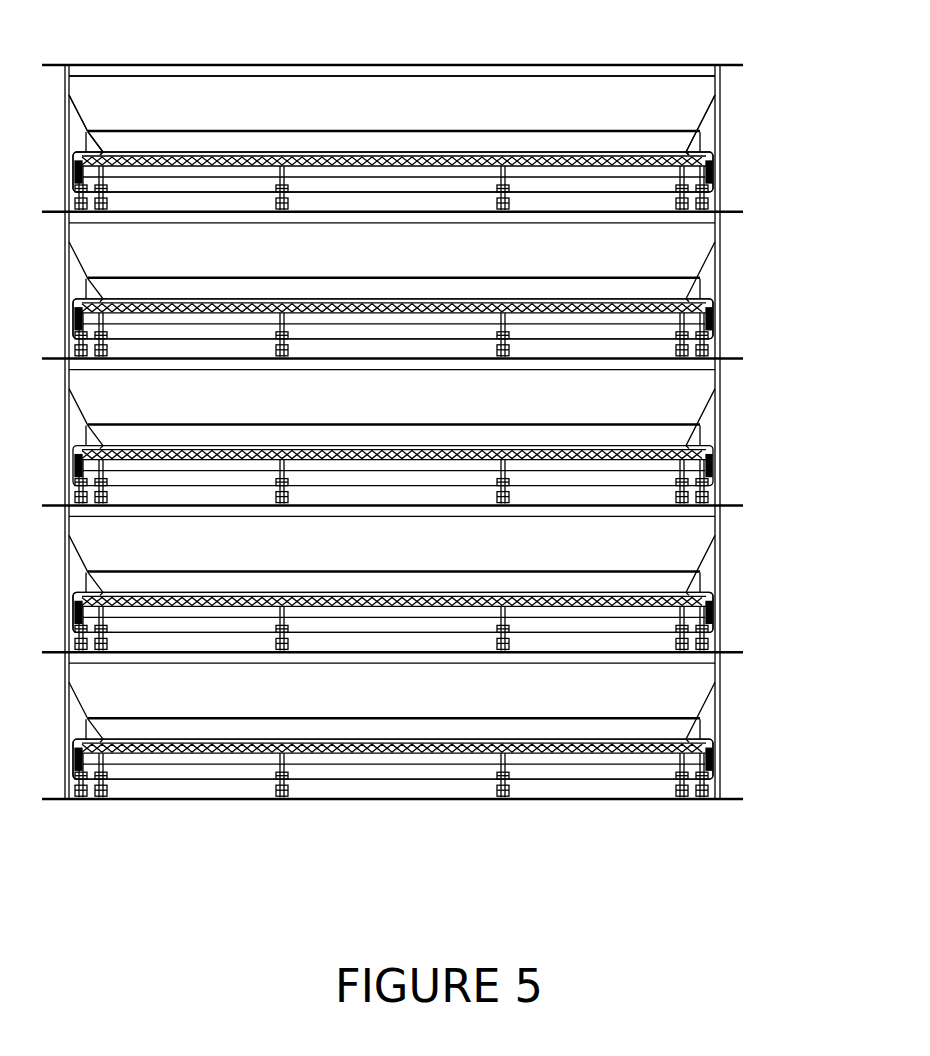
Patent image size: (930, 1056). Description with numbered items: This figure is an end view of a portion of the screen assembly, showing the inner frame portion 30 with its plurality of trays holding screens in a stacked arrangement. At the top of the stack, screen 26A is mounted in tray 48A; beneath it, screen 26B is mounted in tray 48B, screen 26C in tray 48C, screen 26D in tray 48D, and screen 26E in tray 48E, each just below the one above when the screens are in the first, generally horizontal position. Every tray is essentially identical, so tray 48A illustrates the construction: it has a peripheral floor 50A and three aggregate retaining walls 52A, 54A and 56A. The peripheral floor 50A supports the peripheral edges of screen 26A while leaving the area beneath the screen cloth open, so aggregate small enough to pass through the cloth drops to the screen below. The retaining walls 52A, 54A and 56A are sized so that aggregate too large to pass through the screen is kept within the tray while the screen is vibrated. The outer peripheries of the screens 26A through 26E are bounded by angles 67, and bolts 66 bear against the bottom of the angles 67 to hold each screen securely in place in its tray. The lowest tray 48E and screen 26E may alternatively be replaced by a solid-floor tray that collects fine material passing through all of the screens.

The inner frame portion 30 is at (784, 200).
The tray 48A is at (441, 133).
The tray 48B is at (447, 290).
The tray 48C is at (447, 437).
The tray 48D is at (448, 583).
The tray 48E is at (446, 730).
The screen 26A is at (428, 150).
The screen 26B is at (428, 298).
The screen 26C is at (318, 447).
The screen 26D is at (428, 592).
The screen 26E is at (428, 738).
The peripheral floor 50A is at (203, 198).
The aggregate retaining wall 52A is at (94, 115).
The aggregate retaining wall 54A is at (372, 114).
The aggregate retaining wall 56A is at (706, 126).
The bolts 66 is at (276, 210).
The angles 67 is at (302, 298).